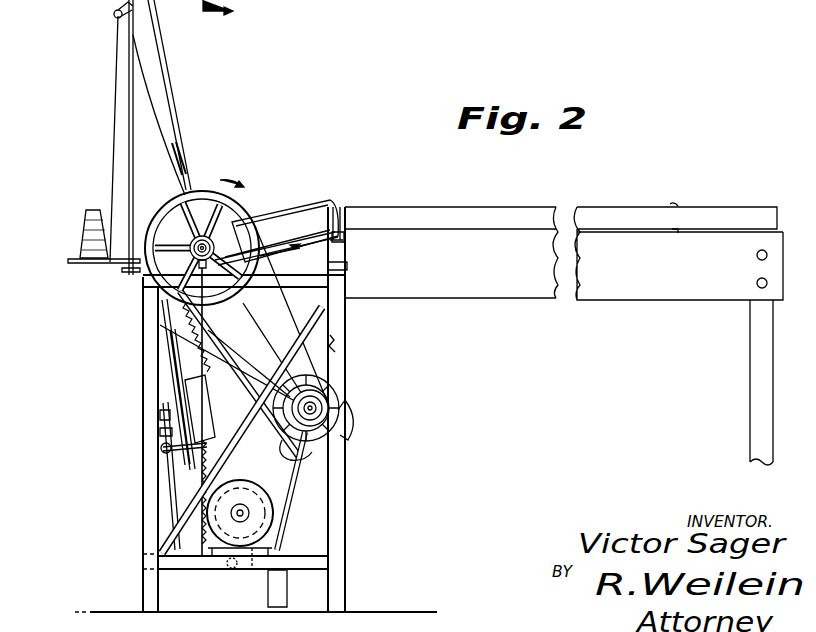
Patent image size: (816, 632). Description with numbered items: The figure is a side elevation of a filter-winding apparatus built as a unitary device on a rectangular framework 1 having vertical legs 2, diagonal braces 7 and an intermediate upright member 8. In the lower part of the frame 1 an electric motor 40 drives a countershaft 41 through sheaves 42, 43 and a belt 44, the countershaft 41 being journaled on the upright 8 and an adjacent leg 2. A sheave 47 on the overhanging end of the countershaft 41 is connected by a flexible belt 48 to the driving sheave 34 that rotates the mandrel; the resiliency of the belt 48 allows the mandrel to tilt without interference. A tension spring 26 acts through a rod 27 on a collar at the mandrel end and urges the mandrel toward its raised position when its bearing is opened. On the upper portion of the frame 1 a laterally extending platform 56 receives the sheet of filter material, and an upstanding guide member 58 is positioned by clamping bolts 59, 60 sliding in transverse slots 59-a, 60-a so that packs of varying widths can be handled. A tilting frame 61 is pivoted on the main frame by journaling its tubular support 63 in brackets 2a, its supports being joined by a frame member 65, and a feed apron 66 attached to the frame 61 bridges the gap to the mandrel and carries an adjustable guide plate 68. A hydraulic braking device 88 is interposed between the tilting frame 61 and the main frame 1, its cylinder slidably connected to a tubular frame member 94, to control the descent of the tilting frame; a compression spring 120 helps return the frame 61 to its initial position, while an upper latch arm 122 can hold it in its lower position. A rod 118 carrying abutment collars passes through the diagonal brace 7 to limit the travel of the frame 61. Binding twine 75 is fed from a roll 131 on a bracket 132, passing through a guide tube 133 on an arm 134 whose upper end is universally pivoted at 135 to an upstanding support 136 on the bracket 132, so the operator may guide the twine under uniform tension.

The rectangular framework 1 is at (347, 505).
The vertical legs 2 is at (147, 507).
The brackets 2a is at (340, 258).
The diagonal braces 7 is at (277, 360).
The intermediate upright member 8 is at (337, 351).
The tension spring 26 is at (200, 482).
The rod 27 is at (216, 315).
The driving sheave 34 is at (247, 207).
The electric motor 40 is at (261, 500).
The countershaft 41 is at (324, 414).
The sheave 42 is at (252, 572).
The sheave 43 is at (348, 388).
The belt 44 is at (303, 460).
The sheave 47 is at (326, 403).
The belt 48 is at (270, 316).
The platform 56 is at (638, 233).
The guide member 58 is at (614, 212).
The clamping bolt 59 is at (456, 207).
The slot 59-a is at (453, 230).
The clamping bolt 60 is at (676, 206).
The slot 60-a is at (677, 234).
The tilting frame 61 is at (347, 266).
The tubular support 63 is at (345, 240).
The frame member 65 is at (291, 255).
The feed apron 66 is at (338, 212).
The guide plate 68 is at (314, 214).
The binding twine 75 is at (116, 133).
The hydraulic braking device 88 is at (182, 395).
The tubular frame member 94 is at (226, 576).
The rod 118 is at (328, 462).
The compression spring 120 is at (182, 337).
The upper latch arm 122 is at (168, 357).
The roll 131 is at (86, 226).
The bracket 132 is at (78, 263).
The guide tube 133 is at (181, 156).
The arm 134 is at (172, 85).
The universal pivotal connection 135 is at (152, 0).
The upstanding support 136 is at (129, 78).